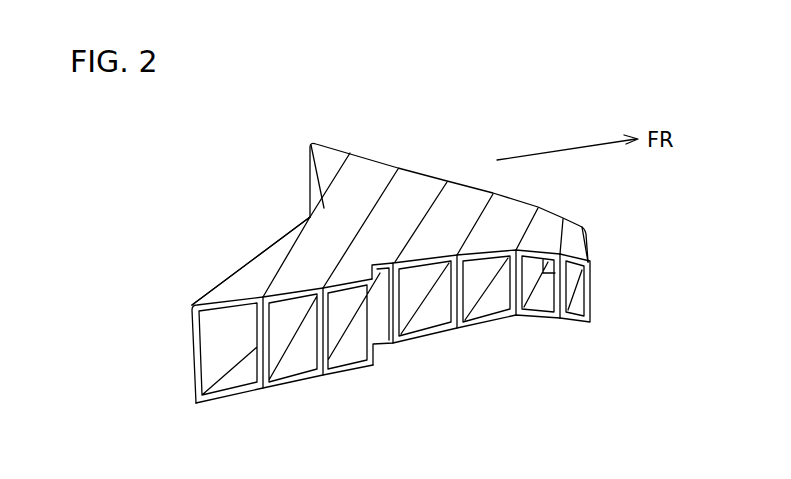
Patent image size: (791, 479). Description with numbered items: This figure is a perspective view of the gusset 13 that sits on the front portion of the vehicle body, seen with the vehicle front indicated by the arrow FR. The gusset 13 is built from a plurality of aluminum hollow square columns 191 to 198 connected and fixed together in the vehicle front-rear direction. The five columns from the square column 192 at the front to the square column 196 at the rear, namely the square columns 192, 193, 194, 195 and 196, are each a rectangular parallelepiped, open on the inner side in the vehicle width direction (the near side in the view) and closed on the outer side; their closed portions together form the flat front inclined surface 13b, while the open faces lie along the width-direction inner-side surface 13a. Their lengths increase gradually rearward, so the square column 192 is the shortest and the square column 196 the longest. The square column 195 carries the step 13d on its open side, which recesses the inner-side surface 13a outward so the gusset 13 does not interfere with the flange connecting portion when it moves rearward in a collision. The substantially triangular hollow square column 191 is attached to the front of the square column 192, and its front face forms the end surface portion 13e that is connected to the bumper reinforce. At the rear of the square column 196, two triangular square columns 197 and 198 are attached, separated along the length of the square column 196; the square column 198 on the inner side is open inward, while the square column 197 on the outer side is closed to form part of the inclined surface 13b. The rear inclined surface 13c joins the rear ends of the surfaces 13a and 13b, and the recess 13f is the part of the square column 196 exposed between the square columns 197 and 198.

The gusset 13 is at (406, 264).
The width-direction inner-side surface 13a is at (331, 365).
The front inclined surface 13b is at (459, 186).
The rear inclined surface 13c is at (267, 247).
The step 13d is at (382, 285).
The end surface portion 13e is at (592, 293).
The recess 13f is at (308, 202).
The hollow square column 191 is at (580, 243).
The square column 192 is at (558, 220).
The square column 193 is at (517, 195).
The square column 194 is at (474, 192).
The square column 195 is at (422, 178).
The square column 196 is at (374, 168).
The square column 197 is at (328, 158).
The square column 198 is at (220, 288).